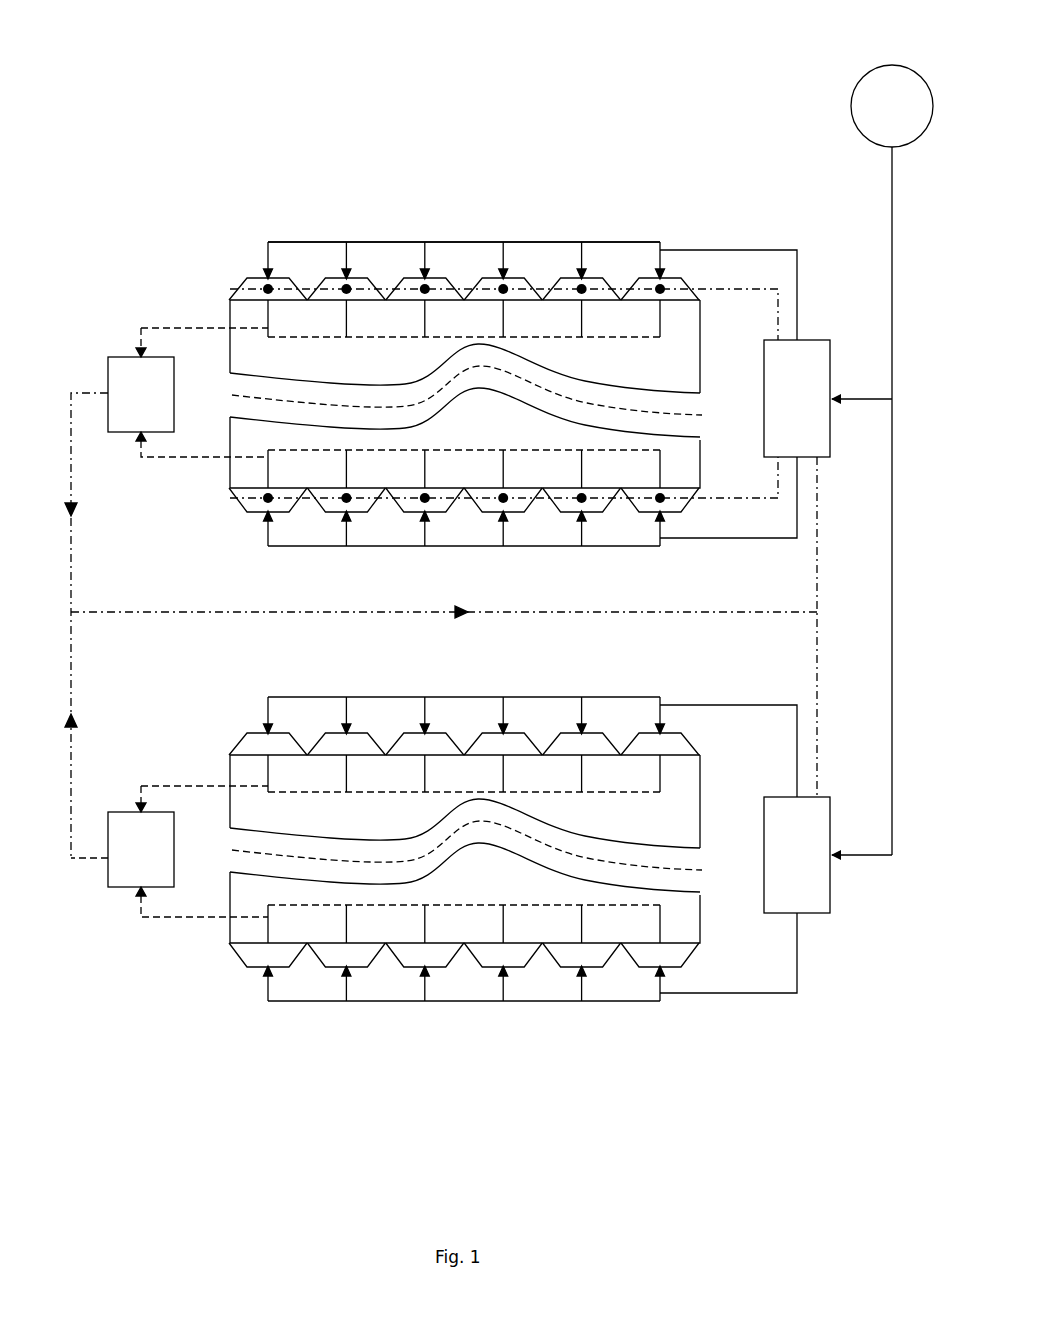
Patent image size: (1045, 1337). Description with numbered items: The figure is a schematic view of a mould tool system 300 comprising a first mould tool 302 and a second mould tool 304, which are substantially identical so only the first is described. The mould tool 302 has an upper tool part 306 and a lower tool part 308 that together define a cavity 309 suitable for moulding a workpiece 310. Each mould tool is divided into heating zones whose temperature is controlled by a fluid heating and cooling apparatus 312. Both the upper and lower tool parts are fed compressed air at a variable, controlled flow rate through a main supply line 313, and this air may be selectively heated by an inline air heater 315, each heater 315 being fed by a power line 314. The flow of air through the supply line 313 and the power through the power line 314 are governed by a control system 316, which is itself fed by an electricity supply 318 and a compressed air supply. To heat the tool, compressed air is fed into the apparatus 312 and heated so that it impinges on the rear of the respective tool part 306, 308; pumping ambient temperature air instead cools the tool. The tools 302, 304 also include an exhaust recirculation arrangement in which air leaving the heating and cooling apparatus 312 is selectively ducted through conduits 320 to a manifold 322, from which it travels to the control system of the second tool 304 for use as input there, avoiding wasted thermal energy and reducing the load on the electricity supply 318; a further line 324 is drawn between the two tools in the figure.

The system 300 is at (145, 115).
The first mould tool 302 is at (375, 173).
The second mould tool 304 is at (353, 1068).
The upper tool part 306 is at (676, 373).
The lower tool part 308 is at (496, 429).
The cavity 309 is at (503, 357).
The workpiece 310 is at (693, 398).
The fluid heating and cooling apparatus 312 is at (256, 292).
The main supply line 313 is at (458, 243).
The power line 314 is at (757, 290).
The inline air heater 315 is at (350, 287).
The control system 316 is at (815, 413).
The electricity supply 318 is at (910, 118).
The conduits 320 is at (140, 328).
The manifold 322 is at (159, 404).
The bypass line 324 is at (270, 614).